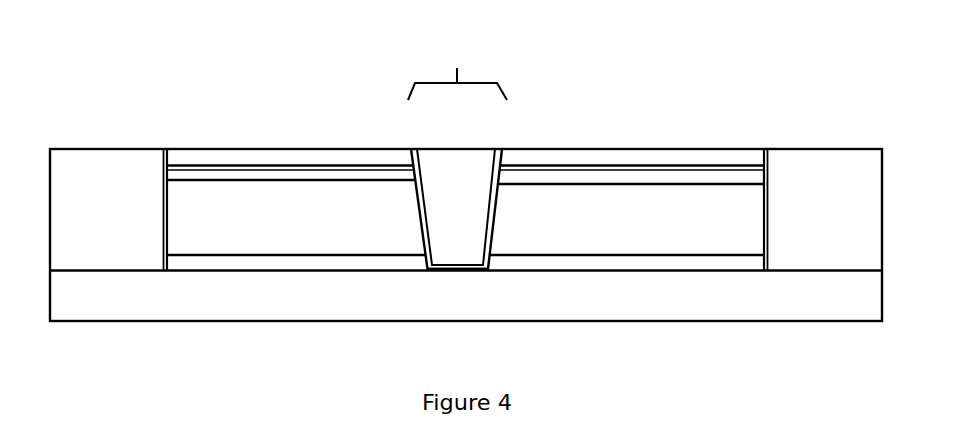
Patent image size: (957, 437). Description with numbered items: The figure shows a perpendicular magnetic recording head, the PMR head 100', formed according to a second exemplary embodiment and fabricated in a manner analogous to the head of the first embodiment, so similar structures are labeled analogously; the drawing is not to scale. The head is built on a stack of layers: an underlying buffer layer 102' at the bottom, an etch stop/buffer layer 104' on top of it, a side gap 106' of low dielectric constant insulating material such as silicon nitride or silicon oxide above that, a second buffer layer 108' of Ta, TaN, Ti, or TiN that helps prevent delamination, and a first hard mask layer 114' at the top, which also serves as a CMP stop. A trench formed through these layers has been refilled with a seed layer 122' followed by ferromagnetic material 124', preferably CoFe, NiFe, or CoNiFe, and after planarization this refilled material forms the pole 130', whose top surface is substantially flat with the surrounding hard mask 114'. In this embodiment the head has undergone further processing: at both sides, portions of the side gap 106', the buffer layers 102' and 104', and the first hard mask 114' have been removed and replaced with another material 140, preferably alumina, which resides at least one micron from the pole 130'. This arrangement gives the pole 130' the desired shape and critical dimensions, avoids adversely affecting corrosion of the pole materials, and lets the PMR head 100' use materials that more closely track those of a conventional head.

The PMR head 100' is at (466, 160).
The underlying layer 102' is at (464, 318).
The etch stop/buffer layer 104' is at (453, 306).
The side gap 106' is at (479, 268).
The second buffer layer 108' is at (465, 145).
The first hard mask layer 114' is at (450, 135).
The seed layer 122' is at (483, 317).
The ferromagnetic material 124' is at (456, 179).
The pole 130' is at (457, 69).
The alumina 140 is at (132, 149).